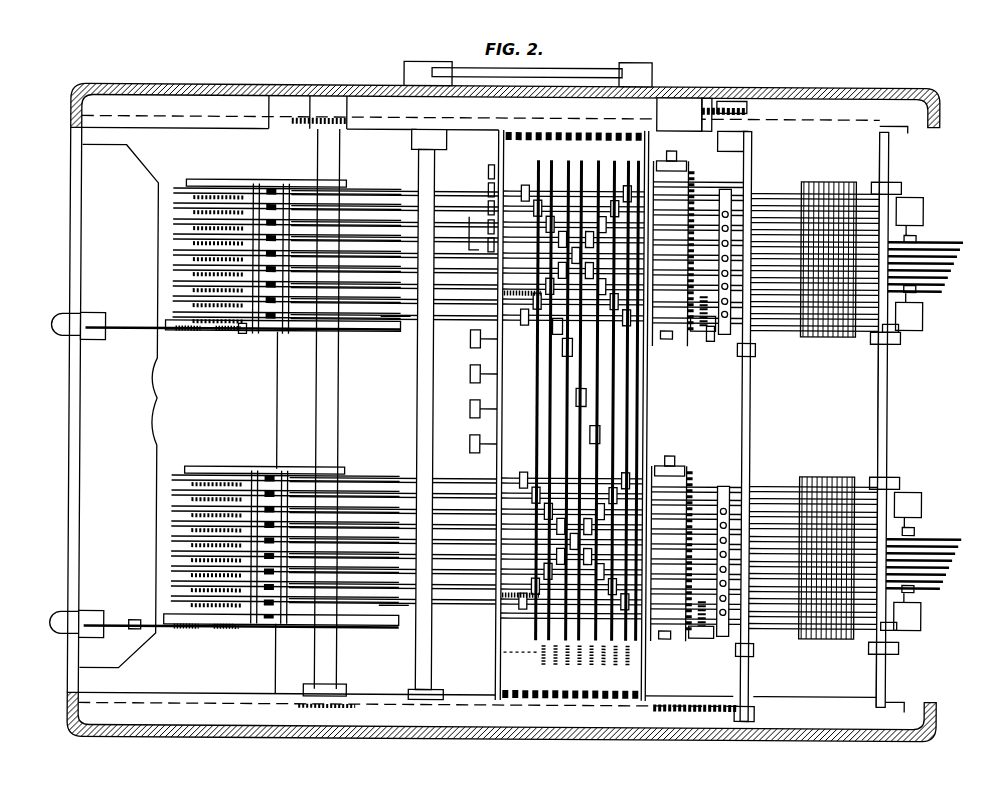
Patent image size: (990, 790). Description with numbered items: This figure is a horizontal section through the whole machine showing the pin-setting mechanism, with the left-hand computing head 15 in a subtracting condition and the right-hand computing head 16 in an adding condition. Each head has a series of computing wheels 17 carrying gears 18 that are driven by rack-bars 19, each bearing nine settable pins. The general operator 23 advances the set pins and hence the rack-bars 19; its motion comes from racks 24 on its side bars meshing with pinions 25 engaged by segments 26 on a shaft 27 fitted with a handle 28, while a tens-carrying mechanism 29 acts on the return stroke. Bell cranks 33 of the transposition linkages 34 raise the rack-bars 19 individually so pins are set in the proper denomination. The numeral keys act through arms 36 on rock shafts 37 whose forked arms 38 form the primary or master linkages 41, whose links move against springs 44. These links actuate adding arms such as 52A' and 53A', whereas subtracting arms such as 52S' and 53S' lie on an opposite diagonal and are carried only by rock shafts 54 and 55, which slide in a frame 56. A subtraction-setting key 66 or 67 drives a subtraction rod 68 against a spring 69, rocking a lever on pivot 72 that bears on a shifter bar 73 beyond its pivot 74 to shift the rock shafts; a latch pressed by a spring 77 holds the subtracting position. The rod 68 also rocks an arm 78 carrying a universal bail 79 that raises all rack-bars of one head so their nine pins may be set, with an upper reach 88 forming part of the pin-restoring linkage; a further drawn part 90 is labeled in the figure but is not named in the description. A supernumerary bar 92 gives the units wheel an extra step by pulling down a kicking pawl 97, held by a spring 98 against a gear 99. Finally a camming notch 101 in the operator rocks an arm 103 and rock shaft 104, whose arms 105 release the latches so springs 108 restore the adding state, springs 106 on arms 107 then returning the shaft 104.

The computing head 15 is at (172, 210).
The computing head 16 is at (172, 493).
The computing wheels 17 is at (175, 278).
The gears 18 is at (175, 248).
The rack-bars 19 is at (398, 322).
The general operator 23 is at (900, 134).
The racks 24 is at (700, 128).
The pinions 25 is at (497, 690).
The segments 26 is at (388, 127).
The shaft 27 is at (434, 174).
The handle 28 is at (652, 72).
The tens-carrying mechanism 29 is at (272, 192).
The bell cranks 33 is at (932, 265).
The transposition linkages 34 is at (822, 192).
The arm 36 is at (470, 376).
The rock shaft 37 is at (528, 356).
The arms 38 is at (552, 330).
The primary or master linkages 41 is at (640, 414).
The spring 44 is at (565, 665).
The adding arm 52A' is at (545, 233).
The subtracting arm 52S' is at (574, 234).
The adding arm 53A' is at (540, 529).
The subtracting arm 53S' is at (597, 525).
The rock shafts 54 is at (682, 170).
The rock shafts 55 is at (684, 474).
The frame 56 is at (545, 405).
The subtraction-setting key 66 is at (225, 326).
The subtraction-setting key 67 is at (224, 624).
The subtraction rod 68 is at (240, 337).
The spring 69 is at (222, 334).
The pivot 72 is at (710, 332).
The shifter bar 73 is at (700, 342).
The pivot 74 is at (663, 340).
The spring 77 is at (712, 340).
The arm 78 is at (880, 334).
The bail 79 is at (866, 195).
The upper reach 88 is at (700, 175).
The perforated strip 90 is at (728, 190).
The supernumerary bar 92 is at (410, 325).
The kicking pawl 97 is at (165, 306).
The spring 98 is at (178, 334).
The gear 99 is at (175, 225).
The camming notch 101 is at (720, 130).
The arm 103 is at (679, 114).
The rock shaft 104 is at (750, 408).
The arm 105 is at (754, 346).
The springs 106 is at (732, 97).
The arms 107 is at (750, 112).
The springs 108 is at (503, 606).